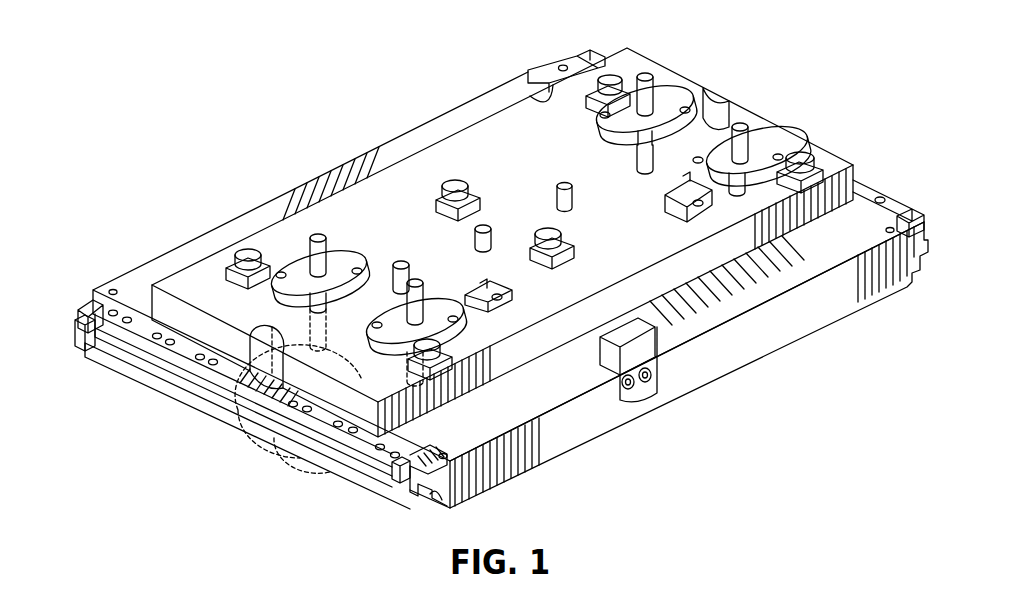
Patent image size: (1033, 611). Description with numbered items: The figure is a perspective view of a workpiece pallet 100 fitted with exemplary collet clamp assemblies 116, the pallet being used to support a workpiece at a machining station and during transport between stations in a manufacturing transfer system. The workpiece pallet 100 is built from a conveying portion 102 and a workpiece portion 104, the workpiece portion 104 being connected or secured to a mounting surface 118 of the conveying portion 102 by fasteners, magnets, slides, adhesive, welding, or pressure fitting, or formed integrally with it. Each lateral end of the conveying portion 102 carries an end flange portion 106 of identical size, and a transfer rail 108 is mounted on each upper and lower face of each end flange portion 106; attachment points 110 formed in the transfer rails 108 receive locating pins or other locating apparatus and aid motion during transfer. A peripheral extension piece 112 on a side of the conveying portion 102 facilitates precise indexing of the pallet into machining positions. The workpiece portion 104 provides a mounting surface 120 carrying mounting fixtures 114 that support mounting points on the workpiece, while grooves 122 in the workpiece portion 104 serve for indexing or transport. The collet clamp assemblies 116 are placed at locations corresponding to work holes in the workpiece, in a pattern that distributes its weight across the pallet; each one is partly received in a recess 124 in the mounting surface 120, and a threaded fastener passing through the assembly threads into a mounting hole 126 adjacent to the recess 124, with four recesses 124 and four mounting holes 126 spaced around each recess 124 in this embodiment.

The workpiece pallet 100 is at (860, 80).
The conveying portion 102 is at (790, 320).
The workpiece portion 104 is at (850, 192).
The end flange portion 106 is at (183, 383).
The transfer rail 108 is at (93, 300).
The attachment point 110 is at (337, 443).
The peripheral extension piece 112 is at (640, 362).
The mounting fixture 114 is at (447, 192).
The collet clamp assembly 116 is at (645, 75).
The mounting surface 118 is at (490, 427).
The mounting surface 120 is at (553, 94).
The groove 122 is at (730, 117).
The recess 124 is at (300, 483).
The mounting hole 126 is at (272, 461).